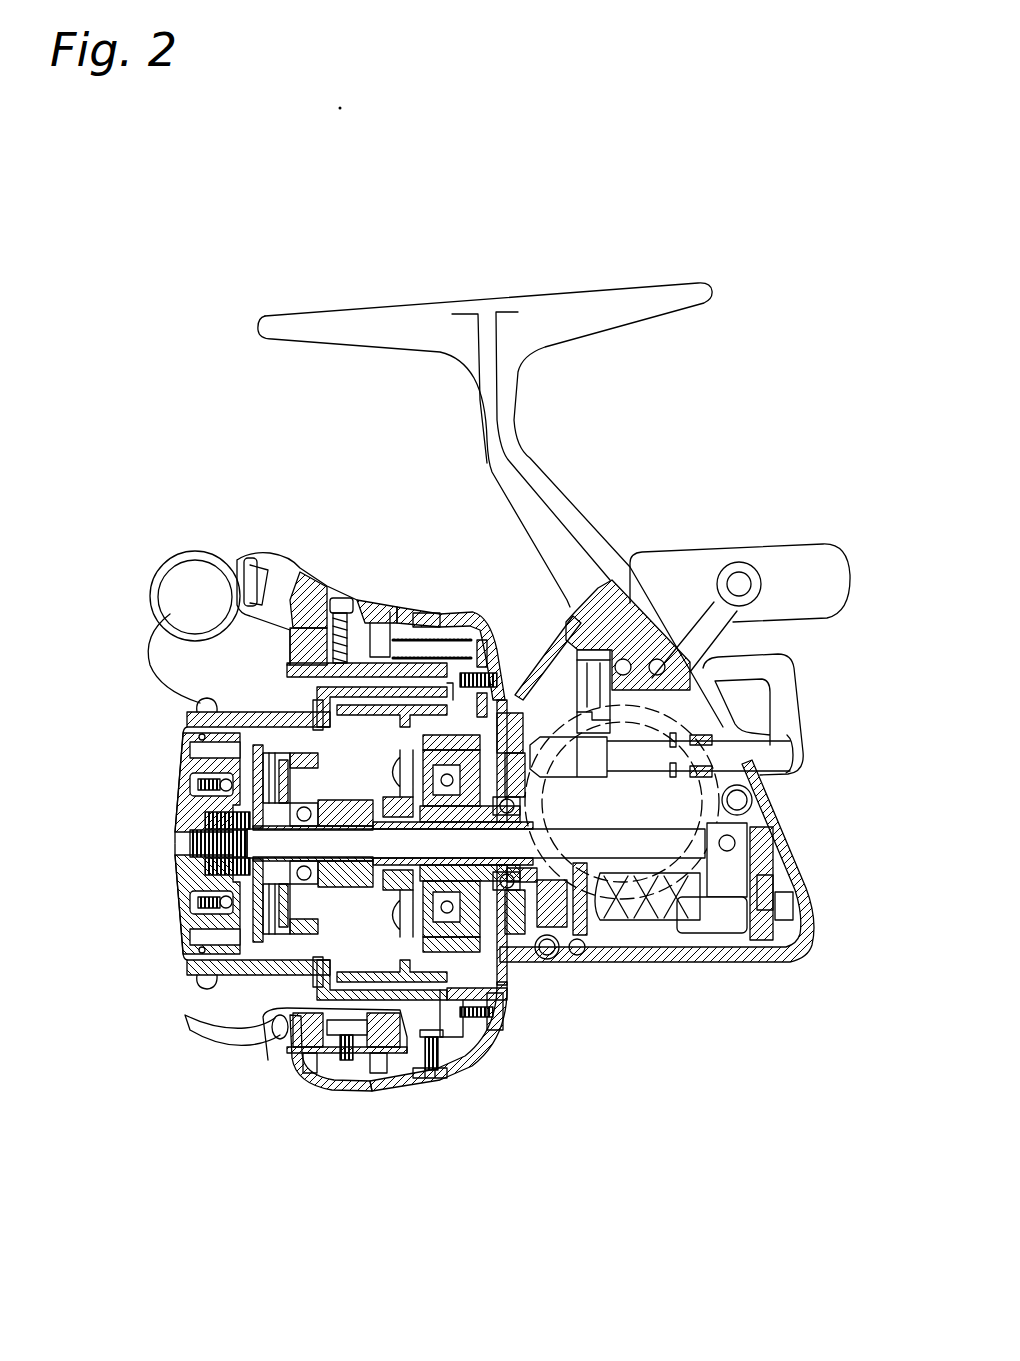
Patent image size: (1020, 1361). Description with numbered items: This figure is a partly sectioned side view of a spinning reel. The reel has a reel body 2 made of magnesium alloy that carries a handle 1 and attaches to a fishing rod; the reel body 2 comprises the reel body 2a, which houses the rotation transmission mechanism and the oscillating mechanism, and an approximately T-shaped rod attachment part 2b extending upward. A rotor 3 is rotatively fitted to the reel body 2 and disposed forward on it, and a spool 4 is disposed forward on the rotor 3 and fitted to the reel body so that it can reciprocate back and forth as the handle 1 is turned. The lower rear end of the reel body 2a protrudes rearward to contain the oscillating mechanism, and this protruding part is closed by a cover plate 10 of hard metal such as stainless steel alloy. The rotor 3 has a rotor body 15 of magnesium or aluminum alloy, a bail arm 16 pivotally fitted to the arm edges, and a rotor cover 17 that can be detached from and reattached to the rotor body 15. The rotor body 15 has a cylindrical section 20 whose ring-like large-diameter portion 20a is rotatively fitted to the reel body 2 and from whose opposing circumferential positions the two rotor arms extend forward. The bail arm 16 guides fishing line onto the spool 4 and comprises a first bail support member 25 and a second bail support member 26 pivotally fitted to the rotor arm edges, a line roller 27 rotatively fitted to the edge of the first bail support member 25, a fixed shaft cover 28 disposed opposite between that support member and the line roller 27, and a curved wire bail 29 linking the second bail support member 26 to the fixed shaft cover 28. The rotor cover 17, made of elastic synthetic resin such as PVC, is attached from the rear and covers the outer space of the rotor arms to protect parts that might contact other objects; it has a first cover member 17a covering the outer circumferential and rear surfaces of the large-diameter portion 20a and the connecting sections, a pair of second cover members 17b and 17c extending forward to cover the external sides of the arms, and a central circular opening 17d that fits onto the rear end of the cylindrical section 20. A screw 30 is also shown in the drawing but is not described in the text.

The handle 1 is at (702, 605).
The reel body 2 is at (568, 622).
The reel body 2a is at (792, 853).
The rod attachment part 2b is at (540, 478).
The rotor 3 is at (339, 807).
The spool 4 is at (234, 986).
The cover plate 10 is at (806, 899).
The rotor body 15 is at (398, 990).
The bail arm 16 is at (322, 575).
The rotor cover 17 is at (476, 610).
The first cover member 17a is at (503, 650).
The second cover member 17b is at (440, 614).
The second cover member 17c is at (358, 1090).
The circular opening 17d is at (522, 690).
The cylindrical section 20 is at (347, 1000).
The large-diameter portion 20a is at (507, 984).
The first bail support member 25 is at (221, 586).
The second bail support member 26 is at (300, 1034).
The line roller 27 is at (192, 610).
The fixed shaft cover 28 is at (198, 632).
The bail 29 is at (187, 1020).
The screw 30 is at (440, 610).